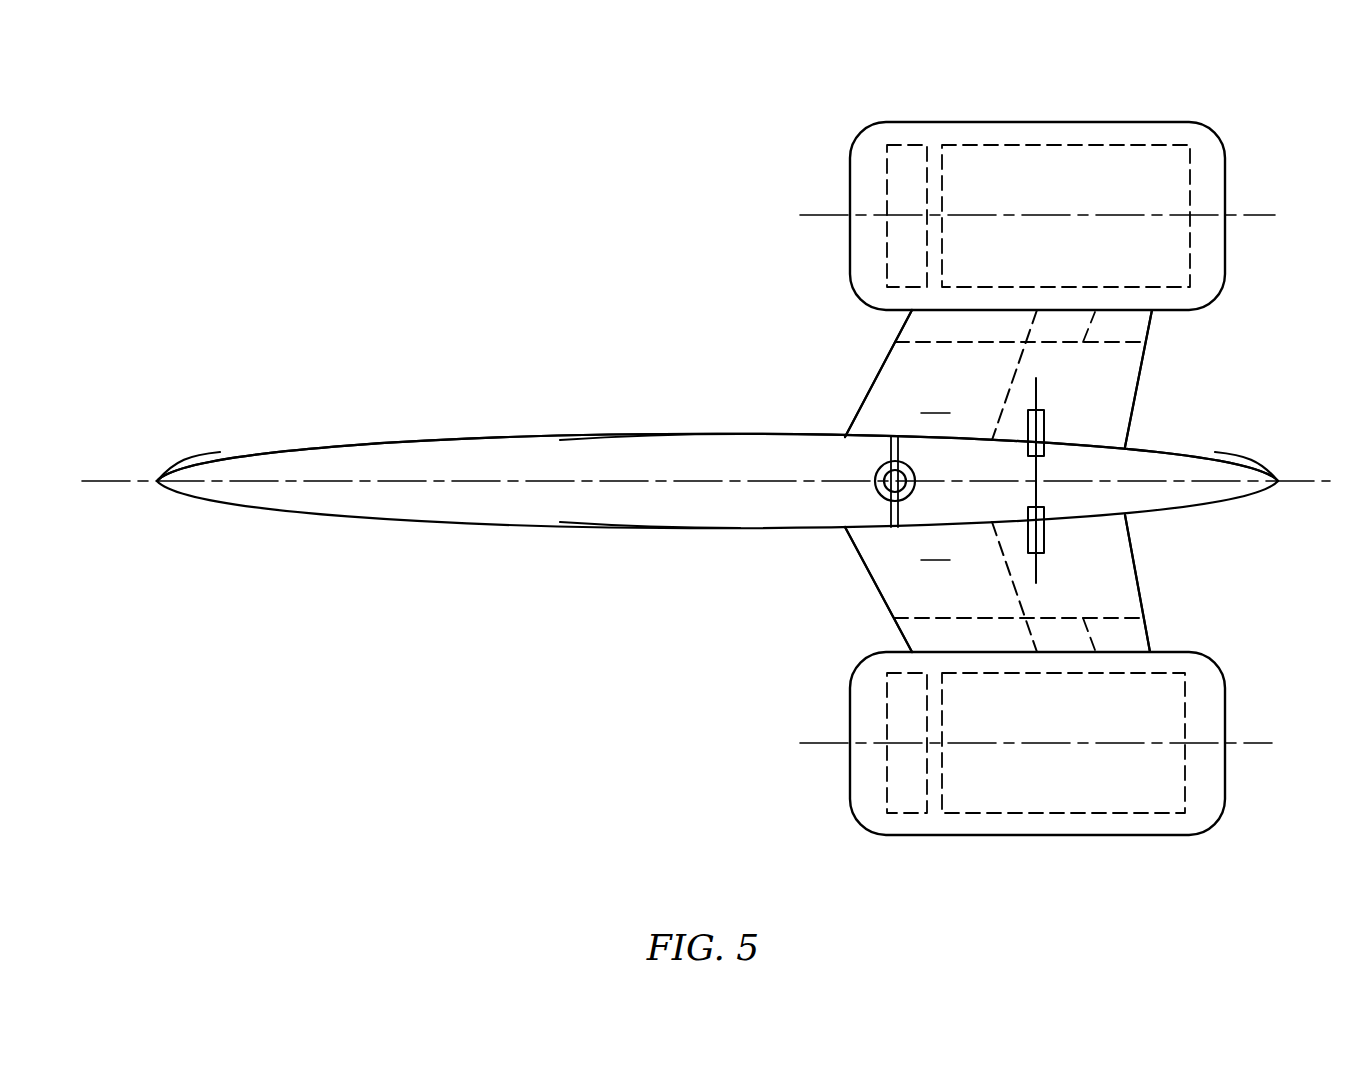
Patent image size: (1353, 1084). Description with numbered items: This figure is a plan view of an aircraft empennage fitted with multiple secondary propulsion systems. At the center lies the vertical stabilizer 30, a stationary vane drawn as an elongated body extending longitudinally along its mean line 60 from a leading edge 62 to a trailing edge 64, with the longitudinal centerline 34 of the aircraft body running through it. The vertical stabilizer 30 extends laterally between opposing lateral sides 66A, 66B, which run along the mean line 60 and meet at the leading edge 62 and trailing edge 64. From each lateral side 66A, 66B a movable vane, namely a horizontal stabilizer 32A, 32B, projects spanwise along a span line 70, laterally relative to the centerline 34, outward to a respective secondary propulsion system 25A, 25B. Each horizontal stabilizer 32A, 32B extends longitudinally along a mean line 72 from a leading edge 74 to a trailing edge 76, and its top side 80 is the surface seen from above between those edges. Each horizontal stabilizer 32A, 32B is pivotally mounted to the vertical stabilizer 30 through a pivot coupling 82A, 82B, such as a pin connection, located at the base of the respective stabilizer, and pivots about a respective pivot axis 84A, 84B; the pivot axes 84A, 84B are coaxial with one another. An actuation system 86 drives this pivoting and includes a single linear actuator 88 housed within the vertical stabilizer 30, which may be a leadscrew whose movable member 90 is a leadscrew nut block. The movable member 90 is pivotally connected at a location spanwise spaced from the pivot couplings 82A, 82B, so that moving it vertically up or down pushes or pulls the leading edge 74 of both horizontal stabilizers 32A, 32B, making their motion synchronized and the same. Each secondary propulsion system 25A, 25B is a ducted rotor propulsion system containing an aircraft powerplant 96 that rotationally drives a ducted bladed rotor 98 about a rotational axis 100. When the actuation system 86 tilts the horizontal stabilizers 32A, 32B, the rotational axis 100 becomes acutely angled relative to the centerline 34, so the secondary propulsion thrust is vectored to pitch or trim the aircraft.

The secondary propulsion system 25A is at (1236, 119).
The secondary propulsion system 25B is at (1236, 846).
The vertical stabilizer 30 is at (373, 422).
The horizontal stabilizer 32A is at (1163, 380).
The horizontal stabilizer 32B is at (1163, 580).
The longitudinal centerline 34 is at (90, 477).
The mean line 60 is at (580, 486).
The leading edge 62 is at (155, 484).
The trailing edge 64 is at (1279, 483).
The lateral side 66A is at (668, 437).
The lateral side 66B is at (668, 527).
The span line 70 is at (1003, 382).
The mean line 72 is at (1083, 342).
The leading edge 74 is at (880, 370).
The trailing edge 76 is at (1138, 394).
The top side 80 is at (934, 475).
The pivot coupling 82A is at (1045, 425).
The pivot coupling 82B is at (1045, 535).
The pivot axis 84A is at (1040, 380).
The pivot axis 84B is at (1040, 580).
The actuation system 86 is at (856, 492).
The linear actuator 88 is at (909, 468).
The movable member 90 is at (878, 468).
The aircraft powerplant 96 is at (1013, 145).
The ducted bladed rotor 98 is at (909, 145).
The rotational axis 100 is at (810, 212).